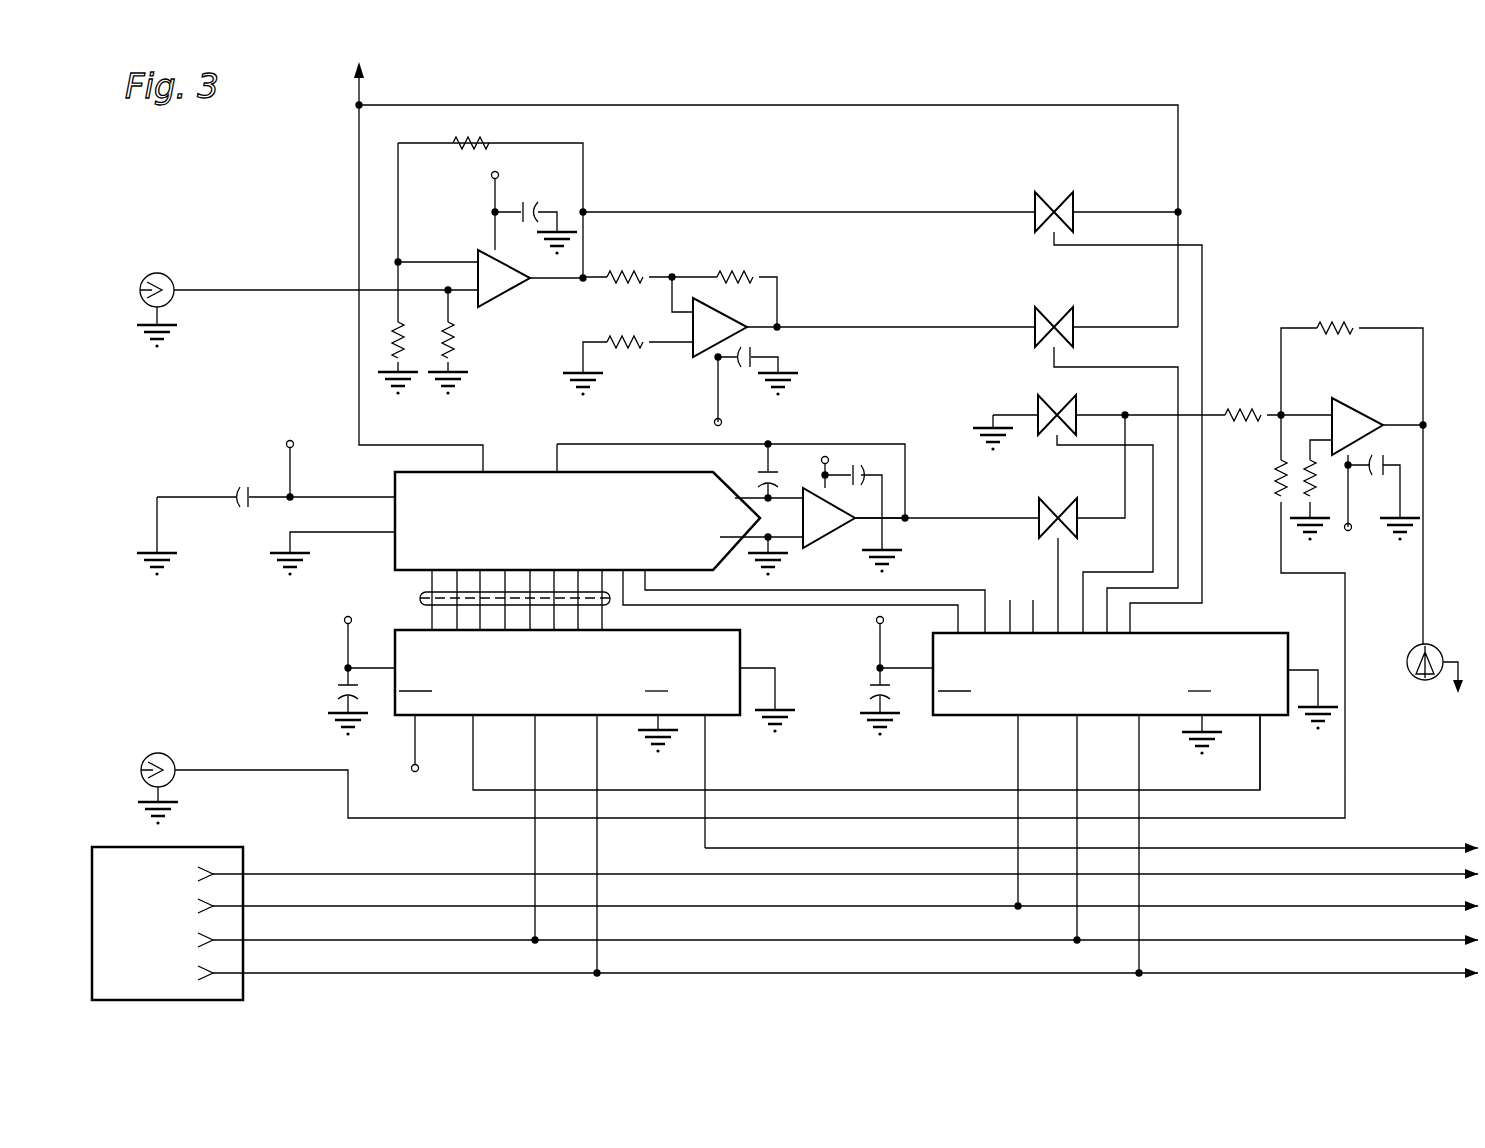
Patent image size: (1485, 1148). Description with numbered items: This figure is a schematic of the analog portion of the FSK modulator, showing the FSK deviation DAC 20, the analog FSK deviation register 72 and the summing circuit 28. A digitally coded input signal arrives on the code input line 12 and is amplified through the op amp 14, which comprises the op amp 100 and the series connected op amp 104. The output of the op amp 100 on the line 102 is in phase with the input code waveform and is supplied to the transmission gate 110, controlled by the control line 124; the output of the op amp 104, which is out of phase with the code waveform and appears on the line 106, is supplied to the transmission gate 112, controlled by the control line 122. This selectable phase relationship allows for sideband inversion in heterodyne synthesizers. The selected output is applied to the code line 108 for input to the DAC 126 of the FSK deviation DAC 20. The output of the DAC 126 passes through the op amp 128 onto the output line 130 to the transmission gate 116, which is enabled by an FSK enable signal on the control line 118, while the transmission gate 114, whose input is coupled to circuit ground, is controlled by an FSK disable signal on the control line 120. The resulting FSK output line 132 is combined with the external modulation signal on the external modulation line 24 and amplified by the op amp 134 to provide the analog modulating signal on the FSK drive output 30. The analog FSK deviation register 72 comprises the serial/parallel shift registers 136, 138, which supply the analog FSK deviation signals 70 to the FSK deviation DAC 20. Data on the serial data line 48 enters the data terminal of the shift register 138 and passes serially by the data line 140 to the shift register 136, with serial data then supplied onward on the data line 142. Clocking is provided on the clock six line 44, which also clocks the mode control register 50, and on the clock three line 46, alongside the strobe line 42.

The code input line 12 is at (198, 290).
The op amp 14 is at (482, 287).
The FSK deviation DAC 20 is at (267, 562).
The external modulation line 24 is at (248, 770).
The summing circuit 28 is at (1355, 465).
The FSK drive output 30 is at (1425, 480).
The strobe line 42 is at (283, 973).
The clock 6 line 44 is at (283, 940).
The clock 3 line 46 is at (283, 874).
The serial data line 48 is at (283, 906).
The mode control register 50 is at (1274, 632).
The analog FSK deviation signals 70 is at (418, 598).
The analog FSK deviation register 72 is at (868, 630).
The op amp 100 is at (487, 383).
The line 102 is at (670, 212).
The op amp 104 is at (722, 310).
The inverted signal line 106 is at (945, 327).
The code line 108 is at (362, 100).
The transmission gate 110 is at (1063, 193).
The transmission gate 112 is at (1063, 308).
The transmission gate 114 is at (1066, 397).
The transmission gate 116 is at (1067, 500).
The control line 118 is at (1056, 572).
The control line 120 is at (1132, 570).
The control line 122 is at (1180, 570).
The control line 124 is at (1205, 605).
The DAC 126 is at (617, 472).
The op amp 128 is at (812, 545).
The output line 130 is at (952, 522).
The FSK output line 132 is at (1213, 412).
The op amp 134 is at (1345, 405).
The serial/parallel shift register 136 is at (707, 722).
The serial/parallel shift register 138 is at (1262, 722).
The data line 140 is at (473, 786).
The data line 142 is at (1395, 848).